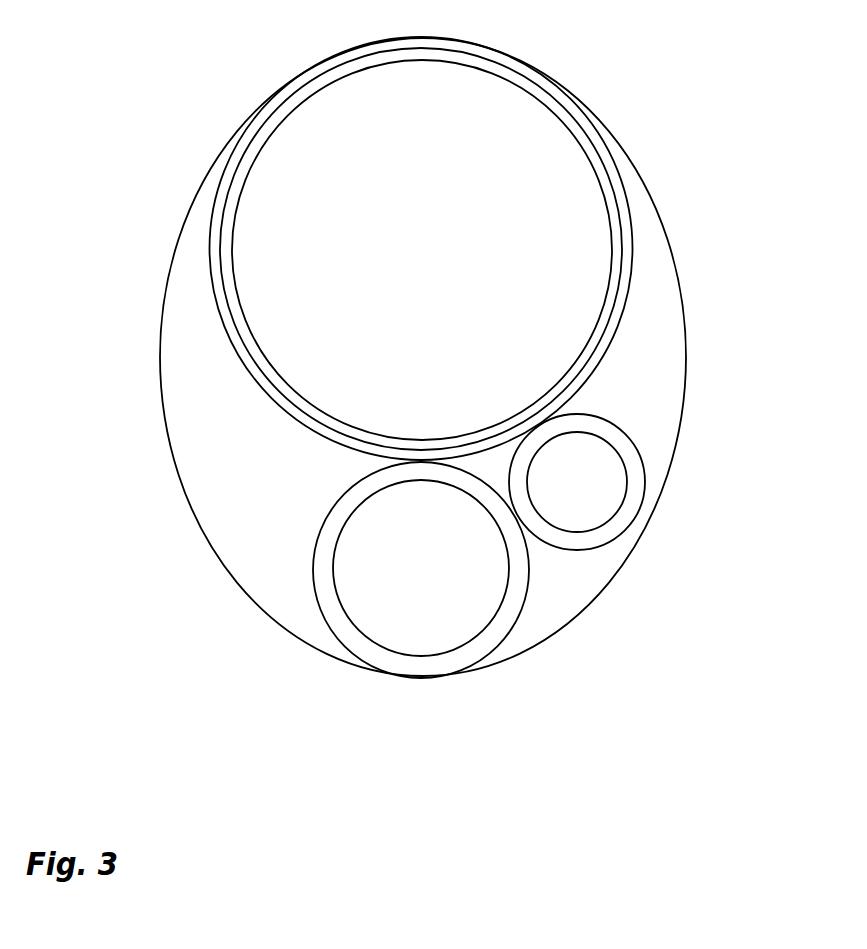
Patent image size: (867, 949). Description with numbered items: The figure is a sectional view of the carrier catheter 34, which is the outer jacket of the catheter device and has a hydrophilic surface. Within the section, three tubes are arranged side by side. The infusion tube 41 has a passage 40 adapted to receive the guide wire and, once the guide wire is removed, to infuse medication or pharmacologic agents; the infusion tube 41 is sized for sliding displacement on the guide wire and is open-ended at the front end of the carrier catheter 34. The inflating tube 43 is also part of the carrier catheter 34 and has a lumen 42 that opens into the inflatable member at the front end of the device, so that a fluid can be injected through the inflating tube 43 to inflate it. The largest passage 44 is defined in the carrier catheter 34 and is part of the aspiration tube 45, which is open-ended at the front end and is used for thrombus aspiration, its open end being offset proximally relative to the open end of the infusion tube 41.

The carrier catheter 34 is at (190, 587).
The passage 40 is at (411, 608).
The infusion tube 41 is at (447, 660).
The lumen 42 is at (613, 500).
The inflating tube 43 is at (627, 460).
The passage 44 is at (458, 142).
The aspiration tube 45 is at (625, 293).